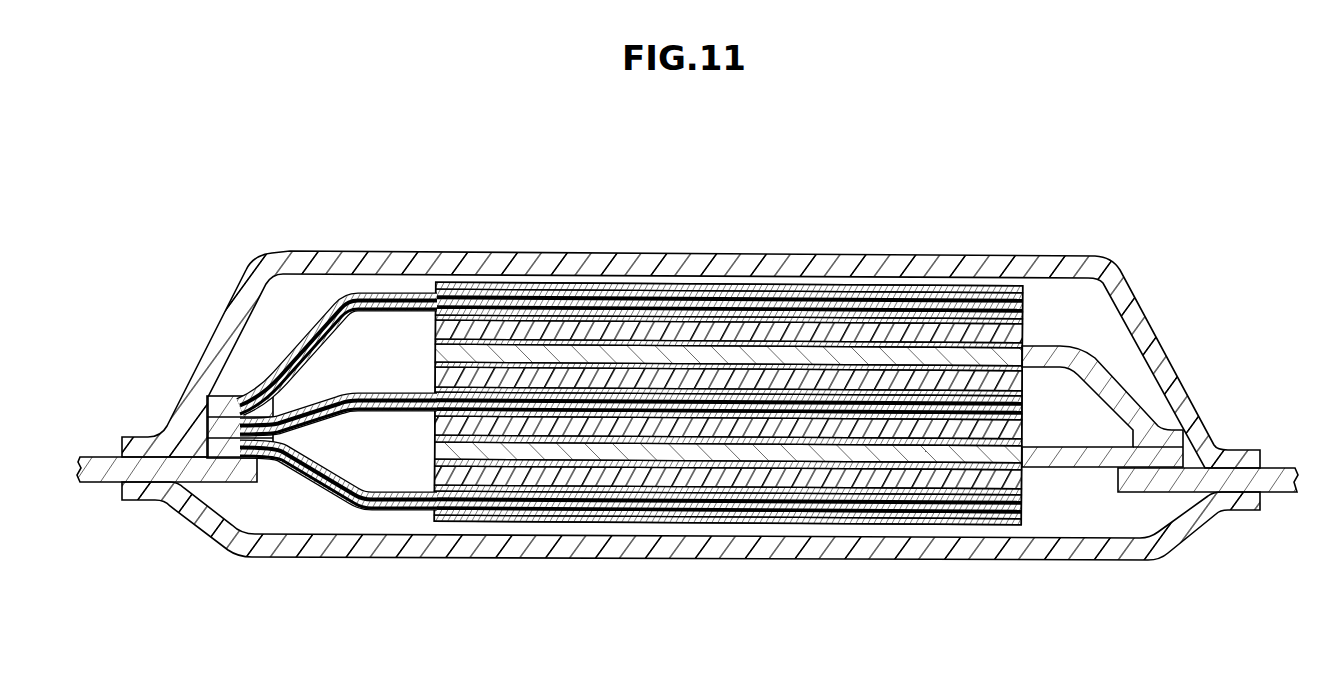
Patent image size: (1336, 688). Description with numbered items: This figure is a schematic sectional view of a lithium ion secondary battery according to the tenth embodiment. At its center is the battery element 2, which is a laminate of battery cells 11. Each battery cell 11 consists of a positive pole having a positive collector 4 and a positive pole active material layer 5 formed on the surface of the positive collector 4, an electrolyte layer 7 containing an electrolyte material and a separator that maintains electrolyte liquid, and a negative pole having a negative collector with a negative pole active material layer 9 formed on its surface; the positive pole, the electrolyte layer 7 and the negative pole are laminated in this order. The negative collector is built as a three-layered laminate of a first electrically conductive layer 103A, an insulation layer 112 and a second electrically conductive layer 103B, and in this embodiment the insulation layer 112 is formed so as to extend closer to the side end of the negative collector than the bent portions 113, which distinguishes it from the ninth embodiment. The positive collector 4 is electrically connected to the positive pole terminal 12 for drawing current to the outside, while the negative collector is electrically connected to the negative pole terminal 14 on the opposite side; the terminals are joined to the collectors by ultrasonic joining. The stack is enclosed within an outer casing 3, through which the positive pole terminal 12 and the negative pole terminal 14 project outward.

The battery cell 11 is at (185, 188).
The bent portions 113 is at (347, 293).
The negative pole terminal 14 is at (108, 468).
The insulation layer 112 is at (622, 289).
The first electrically conductive layer 103A is at (687, 299).
The second electrically conductive layer 103B is at (757, 309).
The negative pole active material layer 9 is at (850, 317).
The electrolyte layer 7 is at (880, 328).
The positive pole active material layer 5 is at (925, 366).
The positive collector 4 is at (965, 352).
The casing 3 is at (1045, 266).
The battery element 2 is at (1036, 413).
The positive pole terminal 12 is at (1273, 472).